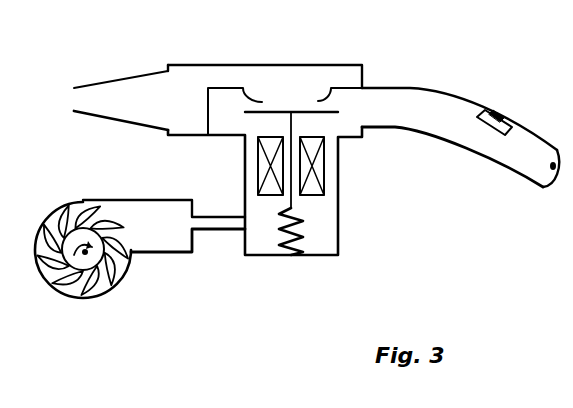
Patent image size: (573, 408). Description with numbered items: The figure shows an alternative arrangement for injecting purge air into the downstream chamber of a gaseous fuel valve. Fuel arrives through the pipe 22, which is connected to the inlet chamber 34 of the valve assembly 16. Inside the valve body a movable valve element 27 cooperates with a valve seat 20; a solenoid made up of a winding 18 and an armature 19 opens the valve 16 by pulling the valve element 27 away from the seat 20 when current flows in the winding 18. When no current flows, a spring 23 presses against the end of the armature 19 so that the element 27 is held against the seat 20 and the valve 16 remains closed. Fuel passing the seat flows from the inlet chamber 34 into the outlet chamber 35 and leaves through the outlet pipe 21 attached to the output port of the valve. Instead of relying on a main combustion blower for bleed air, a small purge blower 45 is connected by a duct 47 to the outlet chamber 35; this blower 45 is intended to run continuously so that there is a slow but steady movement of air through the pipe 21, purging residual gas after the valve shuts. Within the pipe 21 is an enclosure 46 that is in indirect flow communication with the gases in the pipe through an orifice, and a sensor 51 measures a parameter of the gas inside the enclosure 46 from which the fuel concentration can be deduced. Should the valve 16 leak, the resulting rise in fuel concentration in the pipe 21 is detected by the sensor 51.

The valve assembly 16 is at (362, 219).
The pipe 22 is at (136, 72).
The valve element 27 is at (272, 110).
The valve seat 20 is at (316, 96).
The inlet chamber 34 is at (331, 80).
The outlet chamber 35 is at (250, 152).
The winding 18 is at (325, 173).
The armature 19 is at (294, 208).
The spring 23 is at (287, 253).
The outlet pipe 21 is at (492, 157).
The enclosure 46 is at (478, 110).
The sensor 51 is at (498, 113).
The duct 47 is at (218, 231).
The purge blower 45 is at (121, 283).